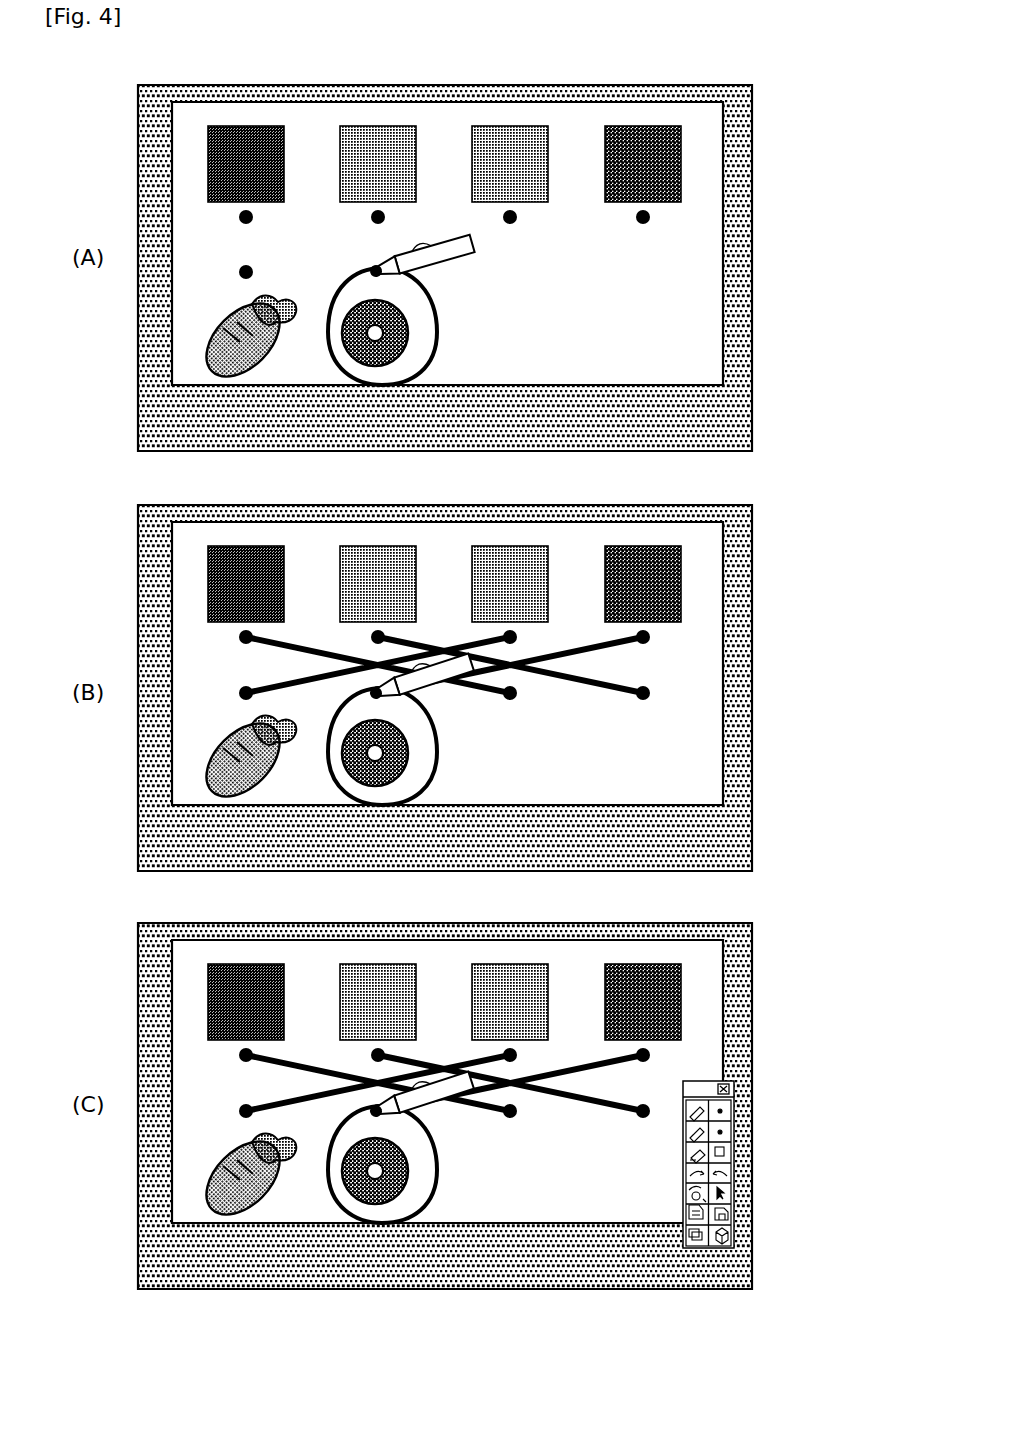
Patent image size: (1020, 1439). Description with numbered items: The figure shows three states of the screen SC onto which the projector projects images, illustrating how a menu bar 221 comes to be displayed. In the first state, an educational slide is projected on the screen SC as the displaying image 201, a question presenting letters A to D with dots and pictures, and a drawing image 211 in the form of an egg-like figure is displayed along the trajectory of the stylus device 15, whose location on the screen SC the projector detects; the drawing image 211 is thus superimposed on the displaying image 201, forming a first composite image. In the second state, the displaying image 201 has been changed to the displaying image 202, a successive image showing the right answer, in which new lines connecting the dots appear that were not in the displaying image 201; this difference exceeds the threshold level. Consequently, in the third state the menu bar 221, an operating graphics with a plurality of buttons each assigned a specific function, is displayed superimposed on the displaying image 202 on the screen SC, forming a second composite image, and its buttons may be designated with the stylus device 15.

The stylus device 15 is at (456, 237).
The displaying image 201 is at (641, 116).
The displaying image 202 is at (584, 536).
The drawing image 211 is at (431, 362).
The menu bar 221 is at (706, 1081).
The screen SC is at (746, 179).